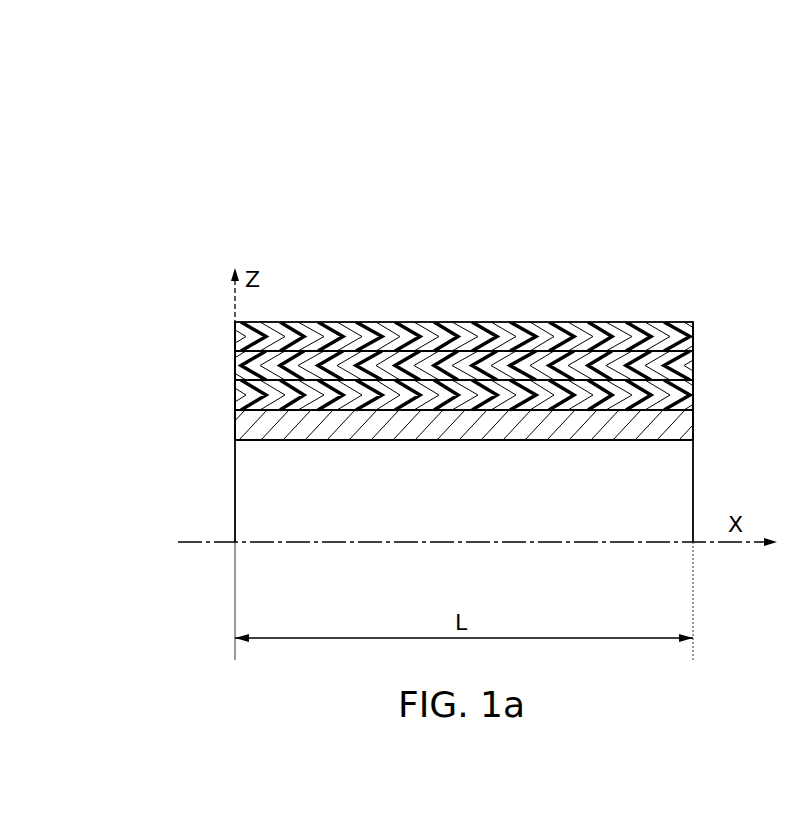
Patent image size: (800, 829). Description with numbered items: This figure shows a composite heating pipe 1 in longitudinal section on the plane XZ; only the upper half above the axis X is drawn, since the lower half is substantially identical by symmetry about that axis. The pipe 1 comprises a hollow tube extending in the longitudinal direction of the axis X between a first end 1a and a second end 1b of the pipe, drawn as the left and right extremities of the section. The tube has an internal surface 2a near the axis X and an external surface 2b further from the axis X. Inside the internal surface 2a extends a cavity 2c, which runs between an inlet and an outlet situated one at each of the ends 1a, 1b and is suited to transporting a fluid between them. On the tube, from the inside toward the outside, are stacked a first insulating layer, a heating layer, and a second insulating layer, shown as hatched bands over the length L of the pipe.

The pipe 1 is at (492, 294).
The first end 1a is at (216, 427).
The second end 1b is at (708, 438).
The internal surface 2a is at (311, 440).
The external surface 2b is at (507, 410).
The cavity 2c is at (445, 515).